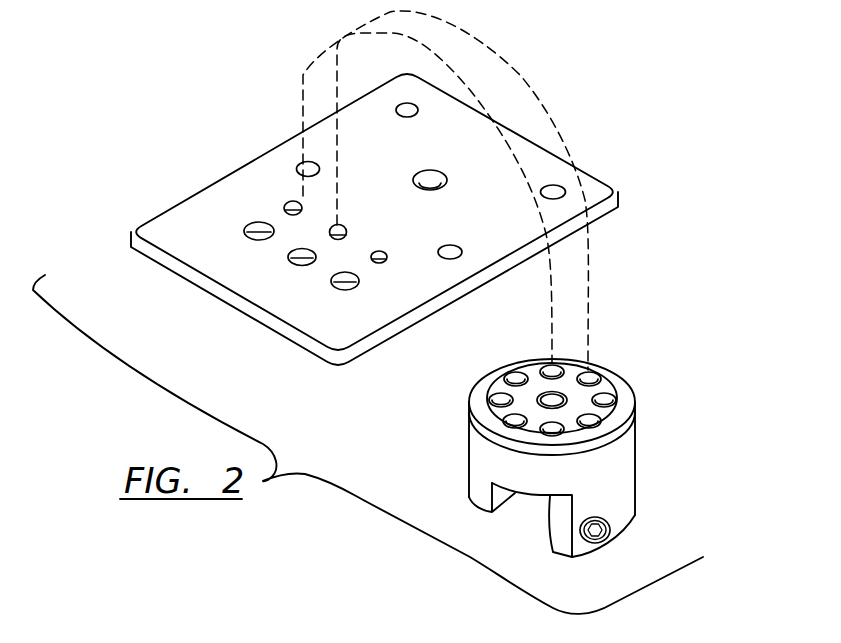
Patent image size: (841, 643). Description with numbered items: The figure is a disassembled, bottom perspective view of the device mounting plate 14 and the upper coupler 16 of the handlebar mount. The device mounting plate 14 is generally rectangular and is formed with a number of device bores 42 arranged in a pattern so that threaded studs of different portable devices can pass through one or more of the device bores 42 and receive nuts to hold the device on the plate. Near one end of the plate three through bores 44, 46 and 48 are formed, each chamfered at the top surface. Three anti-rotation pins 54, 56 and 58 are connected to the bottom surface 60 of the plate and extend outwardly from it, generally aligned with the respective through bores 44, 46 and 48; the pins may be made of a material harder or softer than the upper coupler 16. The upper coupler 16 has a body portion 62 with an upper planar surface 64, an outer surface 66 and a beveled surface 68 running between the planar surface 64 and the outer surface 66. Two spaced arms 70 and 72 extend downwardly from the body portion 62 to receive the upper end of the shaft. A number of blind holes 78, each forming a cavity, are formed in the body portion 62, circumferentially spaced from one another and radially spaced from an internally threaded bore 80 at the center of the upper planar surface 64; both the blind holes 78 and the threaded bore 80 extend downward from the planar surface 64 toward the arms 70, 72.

The device mounting plate 14 is at (441, 202).
The upper coupler 16 is at (727, 465).
The device bores 42 is at (406, 103).
The through bore 44 is at (244, 230).
The through bore 46 is at (288, 257).
The through bore 48 is at (353, 289).
The anti-rotation pin 54 is at (285, 206).
The anti-rotation pin 56 is at (336, 240).
The anti-rotation pin 58 is at (386, 262).
The bottom surface 60 is at (301, 300).
The body portion 62 is at (543, 445).
The upper planar surface 64 is at (544, 396).
The outer surface 66 is at (621, 473).
The beveled surface 68 is at (632, 412).
The arm 70 is at (483, 495).
The arm 72 is at (565, 540).
The blind holes 78 is at (603, 393).
The internally threaded bore 80 is at (548, 408).